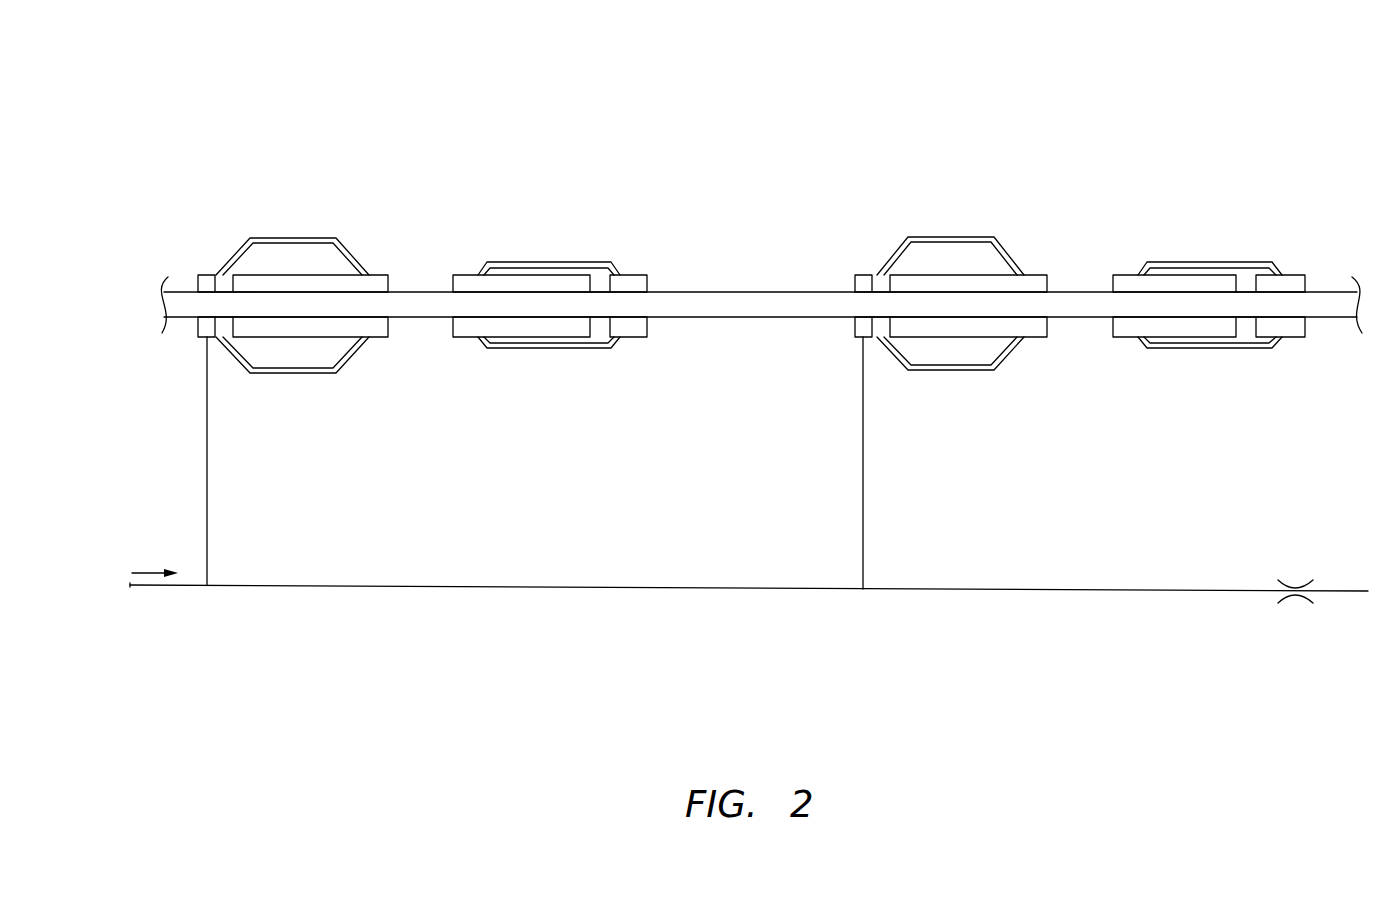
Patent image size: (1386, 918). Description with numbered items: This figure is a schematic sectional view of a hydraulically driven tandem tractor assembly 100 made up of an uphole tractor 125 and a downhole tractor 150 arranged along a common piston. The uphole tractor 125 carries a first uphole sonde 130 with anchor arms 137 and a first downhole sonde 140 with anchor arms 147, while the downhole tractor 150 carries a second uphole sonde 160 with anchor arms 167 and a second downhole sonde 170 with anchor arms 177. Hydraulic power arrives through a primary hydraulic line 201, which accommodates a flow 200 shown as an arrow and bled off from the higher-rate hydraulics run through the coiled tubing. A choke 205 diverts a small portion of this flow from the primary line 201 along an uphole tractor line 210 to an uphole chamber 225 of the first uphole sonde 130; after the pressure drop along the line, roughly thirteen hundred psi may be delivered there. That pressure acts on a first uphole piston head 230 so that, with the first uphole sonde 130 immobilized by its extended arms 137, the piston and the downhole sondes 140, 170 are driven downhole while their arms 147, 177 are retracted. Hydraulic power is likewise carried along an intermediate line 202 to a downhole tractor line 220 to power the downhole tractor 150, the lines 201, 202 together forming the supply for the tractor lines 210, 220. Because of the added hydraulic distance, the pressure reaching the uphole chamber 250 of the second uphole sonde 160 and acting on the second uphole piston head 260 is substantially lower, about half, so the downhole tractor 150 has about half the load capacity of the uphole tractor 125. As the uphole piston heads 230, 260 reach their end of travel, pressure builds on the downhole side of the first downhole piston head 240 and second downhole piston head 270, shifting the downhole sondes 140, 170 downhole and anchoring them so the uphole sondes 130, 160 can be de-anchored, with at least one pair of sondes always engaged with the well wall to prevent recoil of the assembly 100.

The hydraulically driven tandem tractor assembly 100 is at (718, 92).
The uphole tractor 125 is at (424, 194).
The downhole tractor 150 is at (1082, 184).
The first uphole sonde 130 is at (281, 394).
The anchor arms 137 is at (300, 238).
The first downhole sonde 140 is at (514, 378).
The anchor arms 147 is at (508, 263).
The second uphole sonde 160 is at (966, 402).
The anchor arms 167 is at (963, 236).
The second downhole sonde 170 is at (1205, 375).
The anchor arms 177 is at (1178, 262).
The uphole chamber 225 is at (204, 282).
The first uphole piston head 230 is at (228, 286).
The first downhole piston head 240 is at (600, 283).
The uphole chamber 250 is at (862, 282).
The second uphole piston head 260 is at (886, 287).
The second downhole piston head 270 is at (1248, 283).
The hydraulic flow 200 is at (150, 573).
The primary hydraulic line 201 is at (170, 586).
The intermediate line 202 is at (531, 585).
The choke 205 is at (1289, 616).
The uphole tractor line 210 is at (206, 448).
The downhole tractor line 220 is at (862, 456).